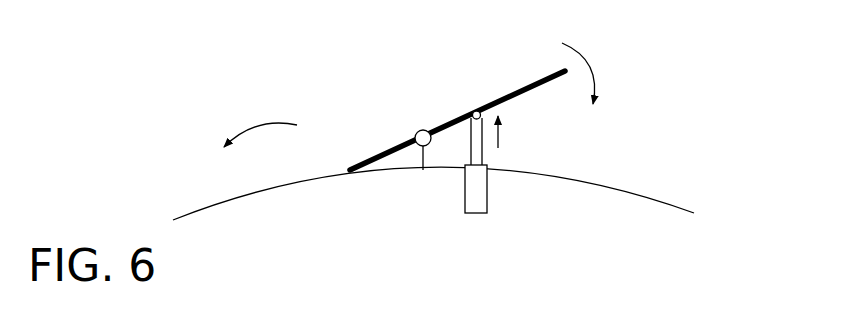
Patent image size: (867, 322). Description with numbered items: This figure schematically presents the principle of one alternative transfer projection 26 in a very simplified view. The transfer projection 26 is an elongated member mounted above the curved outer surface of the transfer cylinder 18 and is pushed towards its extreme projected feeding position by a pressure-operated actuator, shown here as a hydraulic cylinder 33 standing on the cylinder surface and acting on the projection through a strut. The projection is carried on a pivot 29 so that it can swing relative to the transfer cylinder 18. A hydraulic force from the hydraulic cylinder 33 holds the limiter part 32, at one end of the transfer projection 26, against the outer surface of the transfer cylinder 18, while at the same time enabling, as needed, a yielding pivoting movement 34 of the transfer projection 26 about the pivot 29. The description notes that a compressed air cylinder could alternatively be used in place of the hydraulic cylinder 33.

The transfer cylinder 18 is at (670, 200).
The transfer projection 26 is at (424, 76).
The pivot 29 is at (417, 131).
The limiter part 32 is at (357, 171).
The hydraulic cylinder 33 is at (477, 188).
The yielding pivoting movement 34 is at (595, 73).